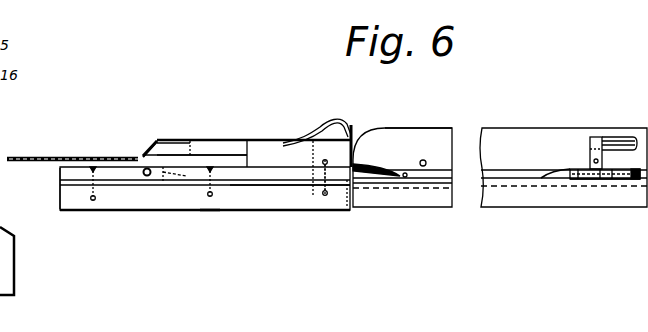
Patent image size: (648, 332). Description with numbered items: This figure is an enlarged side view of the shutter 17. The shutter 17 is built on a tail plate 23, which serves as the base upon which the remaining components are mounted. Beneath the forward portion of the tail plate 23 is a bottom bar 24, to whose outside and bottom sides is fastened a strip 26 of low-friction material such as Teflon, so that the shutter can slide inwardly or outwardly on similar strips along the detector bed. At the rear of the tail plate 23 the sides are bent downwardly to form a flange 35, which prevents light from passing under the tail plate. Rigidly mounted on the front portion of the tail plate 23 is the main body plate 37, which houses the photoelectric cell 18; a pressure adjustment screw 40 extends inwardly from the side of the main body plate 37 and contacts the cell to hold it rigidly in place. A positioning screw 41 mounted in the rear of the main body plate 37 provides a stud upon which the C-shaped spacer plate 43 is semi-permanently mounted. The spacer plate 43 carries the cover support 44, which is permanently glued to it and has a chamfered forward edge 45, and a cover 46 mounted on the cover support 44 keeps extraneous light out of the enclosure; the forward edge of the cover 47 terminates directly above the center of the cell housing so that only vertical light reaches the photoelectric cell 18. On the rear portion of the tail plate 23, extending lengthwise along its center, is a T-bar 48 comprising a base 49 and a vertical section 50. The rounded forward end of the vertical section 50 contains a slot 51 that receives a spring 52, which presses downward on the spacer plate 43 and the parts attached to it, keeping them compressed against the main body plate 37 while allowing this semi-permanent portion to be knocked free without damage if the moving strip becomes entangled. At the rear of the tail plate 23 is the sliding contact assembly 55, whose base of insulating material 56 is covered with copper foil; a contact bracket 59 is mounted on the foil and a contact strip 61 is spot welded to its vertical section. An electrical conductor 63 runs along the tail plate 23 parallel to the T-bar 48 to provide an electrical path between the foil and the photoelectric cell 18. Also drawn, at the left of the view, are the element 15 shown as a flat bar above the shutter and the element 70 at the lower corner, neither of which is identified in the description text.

The guide bar 15 is at (48, 157).
The shutter 17 is at (270, 218).
The photoelectric cell 18 is at (171, 180).
The tail plate 23 is at (446, 207).
The bottom bar 24 is at (290, 196).
The strip 26 is at (215, 212).
The flange 35 is at (564, 197).
The main body plate 37 is at (60, 172).
The pressure adjustment screw 40 is at (145, 176).
The positioning screw 41 is at (322, 191).
The spacer plate 43 is at (290, 160).
The cover support 44 is at (247, 150).
The chamfered forward edge 45 is at (152, 141).
The cover 46 is at (205, 140).
The forward edge of the cover 47 is at (143, 153).
The T-bar 48 is at (427, 127).
The base 49 is at (498, 170).
The vertical section 50 is at (402, 152).
The slot 51 is at (358, 166).
The spring 52 is at (348, 122).
The sliding contact assembly 55 is at (612, 166).
The base of insulating material 56 is at (602, 180).
The contact bracket 59 is at (590, 161).
The contact strip 61 is at (630, 137).
The electrical conductor 63 is at (553, 171).
The corner member 70 is at (0, 221).